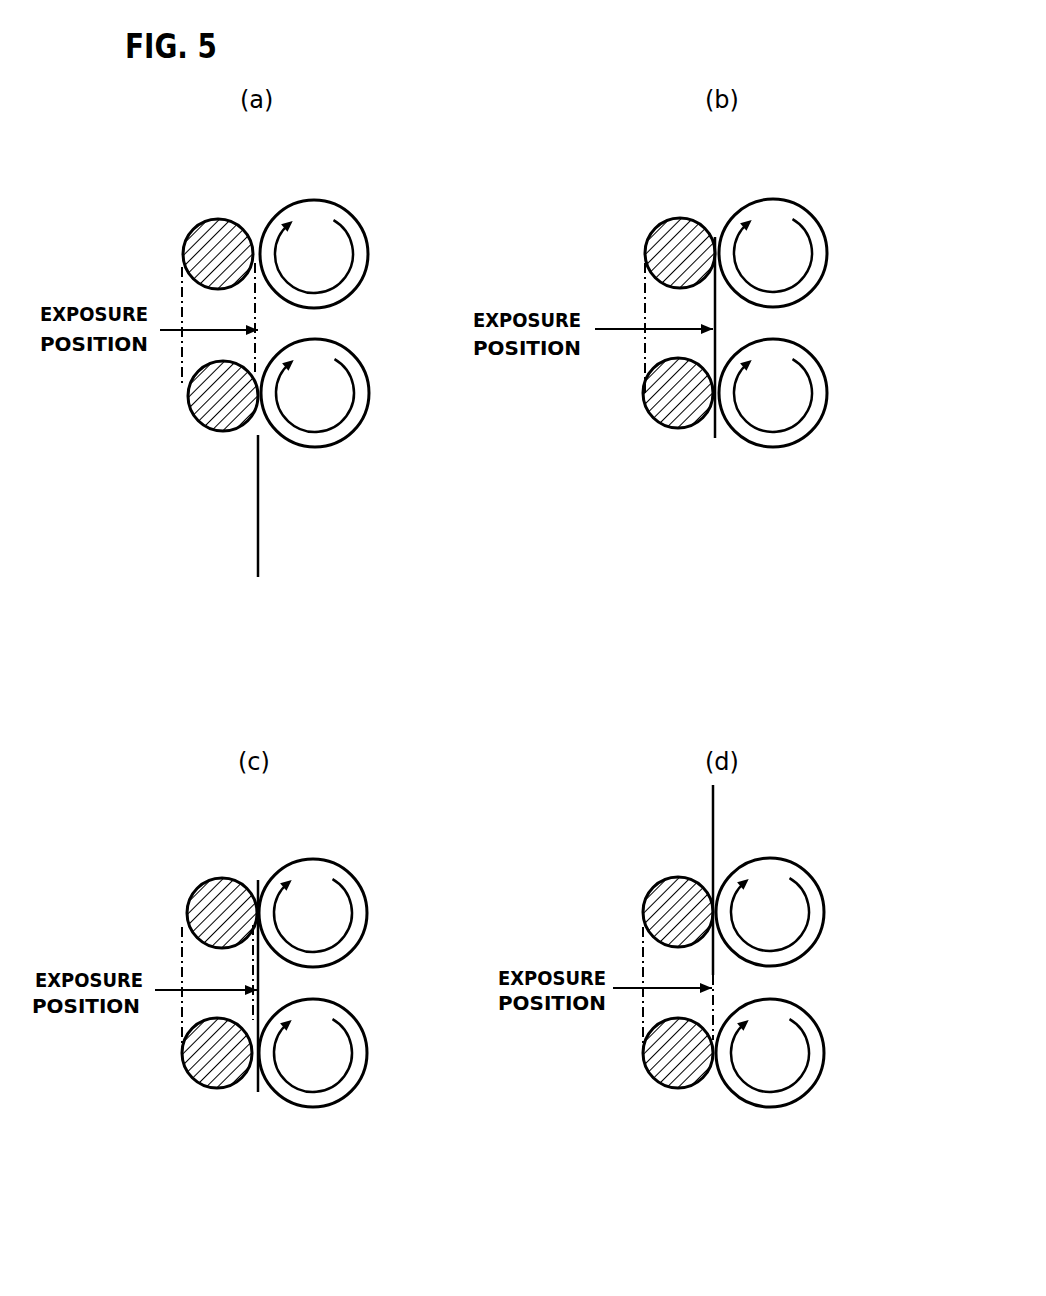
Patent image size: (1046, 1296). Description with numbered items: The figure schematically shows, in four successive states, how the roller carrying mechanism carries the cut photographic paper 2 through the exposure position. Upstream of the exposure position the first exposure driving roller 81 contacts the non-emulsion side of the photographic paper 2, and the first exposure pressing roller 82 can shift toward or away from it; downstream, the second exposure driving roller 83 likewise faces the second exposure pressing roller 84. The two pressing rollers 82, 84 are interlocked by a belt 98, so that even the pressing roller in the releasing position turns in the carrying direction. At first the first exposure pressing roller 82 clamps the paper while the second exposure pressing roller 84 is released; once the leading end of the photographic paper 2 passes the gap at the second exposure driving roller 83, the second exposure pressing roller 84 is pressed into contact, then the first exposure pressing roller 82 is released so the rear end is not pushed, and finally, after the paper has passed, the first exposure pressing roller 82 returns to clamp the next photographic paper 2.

The photographic paper 2 is at (258, 520).
The first exposure driving roller 81 is at (352, 433).
The first exposure pressing roller 82 is at (200, 420).
The second exposure driving roller 83 is at (353, 217).
The second exposure pressing roller 84 is at (190, 230).
The belt 98 is at (180, 302).